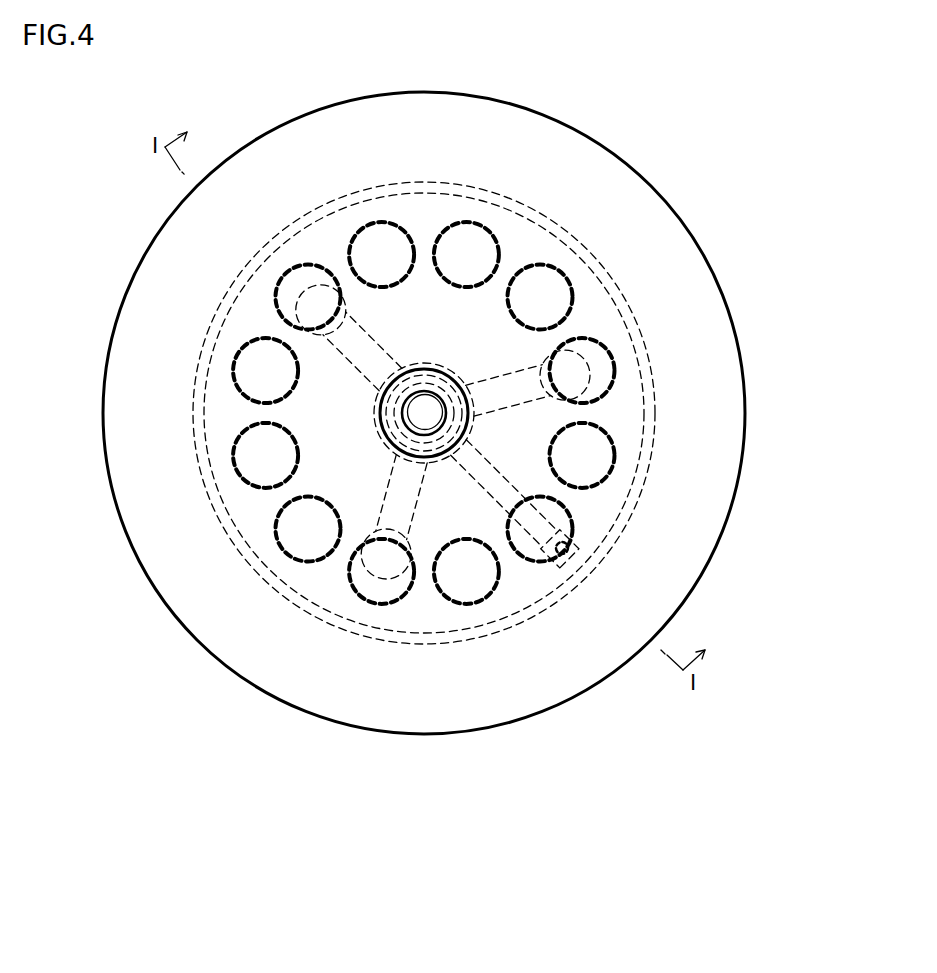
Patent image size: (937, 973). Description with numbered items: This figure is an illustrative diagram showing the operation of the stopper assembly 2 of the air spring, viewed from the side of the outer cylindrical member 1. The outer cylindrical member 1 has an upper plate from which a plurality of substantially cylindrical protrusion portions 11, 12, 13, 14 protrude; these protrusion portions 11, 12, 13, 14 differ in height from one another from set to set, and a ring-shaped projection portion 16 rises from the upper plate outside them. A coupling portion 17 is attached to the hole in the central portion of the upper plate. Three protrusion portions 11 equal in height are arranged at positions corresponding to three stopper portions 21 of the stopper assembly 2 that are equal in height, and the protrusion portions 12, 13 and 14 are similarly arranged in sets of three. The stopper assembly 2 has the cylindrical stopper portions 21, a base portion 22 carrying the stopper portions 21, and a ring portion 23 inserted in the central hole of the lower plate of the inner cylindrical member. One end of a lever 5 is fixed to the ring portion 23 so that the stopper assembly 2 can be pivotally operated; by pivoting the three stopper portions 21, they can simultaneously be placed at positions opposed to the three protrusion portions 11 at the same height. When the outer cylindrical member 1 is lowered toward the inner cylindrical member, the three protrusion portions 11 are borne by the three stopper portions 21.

The outer cylindrical member 1 is at (710, 326).
The stopper assembly 2 is at (378, 776).
The lever 5 is at (508, 490).
The protrusion portion 11 is at (290, 284).
The protrusion portion 12 is at (382, 240).
The protrusion portion 13 is at (548, 285).
The protrusion portion 14 is at (468, 240).
The ring-shaped projection portion 16 is at (622, 297).
The coupling portion 17 is at (422, 427).
The stopper portion 21 is at (392, 563).
The base portion 22 is at (403, 507).
The ring portion 23 is at (425, 447).